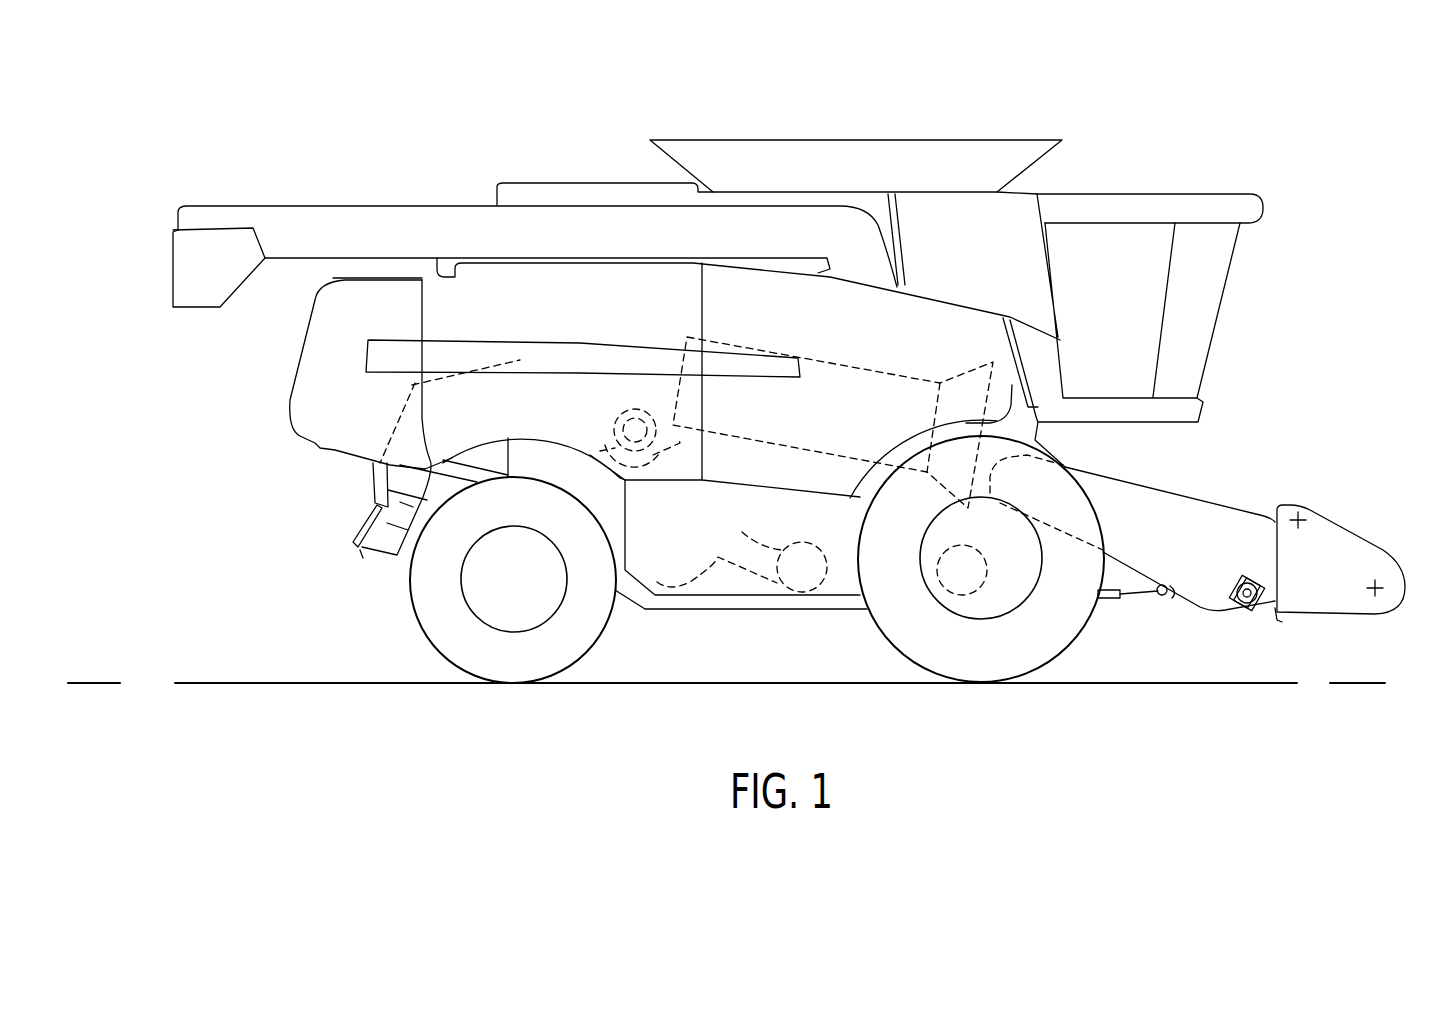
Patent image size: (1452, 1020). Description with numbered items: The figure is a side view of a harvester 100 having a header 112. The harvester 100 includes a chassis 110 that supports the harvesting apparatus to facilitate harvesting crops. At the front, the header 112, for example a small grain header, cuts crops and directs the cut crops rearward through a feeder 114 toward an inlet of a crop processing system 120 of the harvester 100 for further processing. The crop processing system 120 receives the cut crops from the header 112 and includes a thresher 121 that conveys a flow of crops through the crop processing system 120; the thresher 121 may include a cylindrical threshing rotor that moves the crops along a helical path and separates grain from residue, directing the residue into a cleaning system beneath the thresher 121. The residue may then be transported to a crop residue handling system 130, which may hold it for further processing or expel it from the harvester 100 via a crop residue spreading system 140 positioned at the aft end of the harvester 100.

The harvester 100 is at (1262, 92).
The chassis 110 is at (680, 613).
The header 112 is at (1383, 540).
The feeder 114 is at (1265, 480).
The crop processing system 120 is at (842, 335).
The thresher 121 is at (853, 365).
The crop residue handling system 130 is at (563, 340).
The crop residue spreading system 140 is at (358, 522).